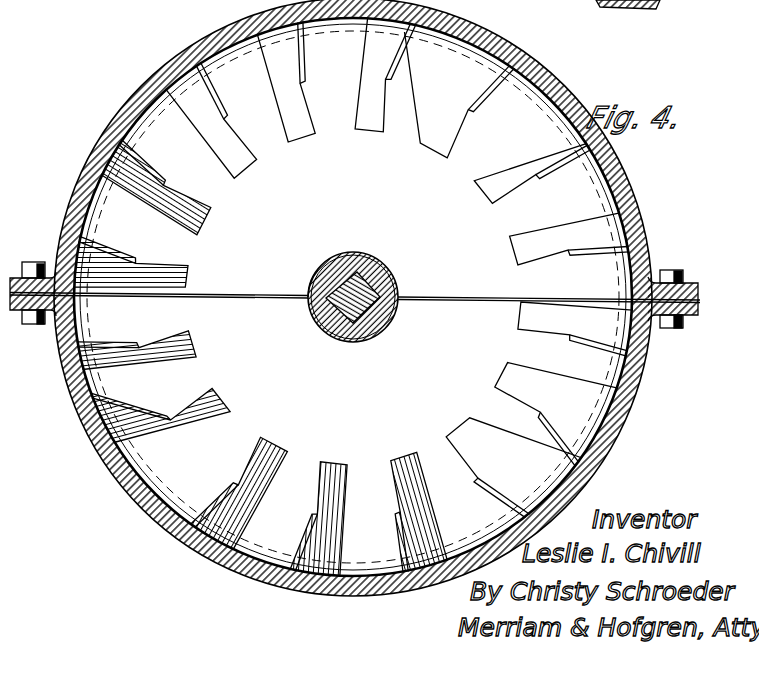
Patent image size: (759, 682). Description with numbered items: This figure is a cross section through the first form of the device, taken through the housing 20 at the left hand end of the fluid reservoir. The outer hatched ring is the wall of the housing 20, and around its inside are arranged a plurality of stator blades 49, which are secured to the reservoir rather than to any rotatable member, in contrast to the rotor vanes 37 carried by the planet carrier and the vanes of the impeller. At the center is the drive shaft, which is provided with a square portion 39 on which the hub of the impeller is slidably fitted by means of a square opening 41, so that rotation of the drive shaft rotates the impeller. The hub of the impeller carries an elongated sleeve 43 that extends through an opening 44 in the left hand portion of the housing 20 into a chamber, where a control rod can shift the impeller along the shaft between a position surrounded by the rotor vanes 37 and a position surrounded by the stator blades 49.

The housing 20 is at (88, 160).
The rotor vanes 37 is at (579, 0).
The square portion 39 is at (358, 282).
The square opening 41 is at (380, 305).
The elongated sleeve 43 is at (382, 286).
The opening 44 is at (318, 280).
The stator blades 49 is at (367, 120).